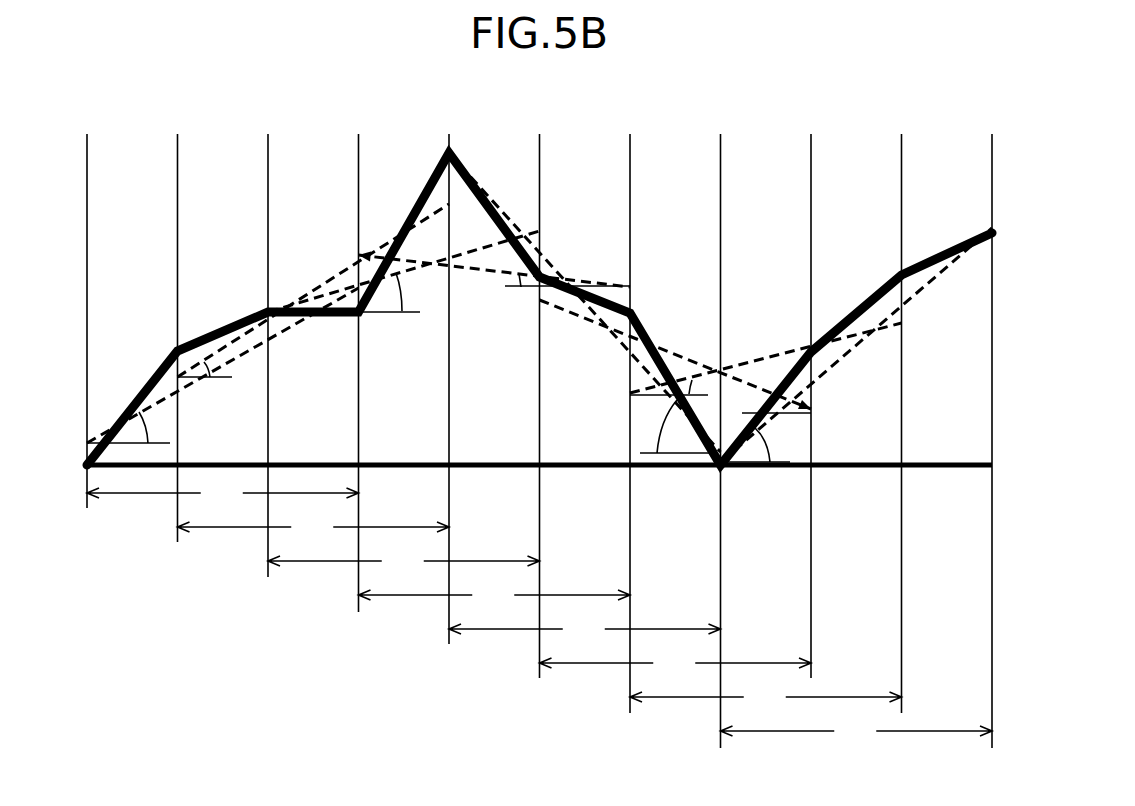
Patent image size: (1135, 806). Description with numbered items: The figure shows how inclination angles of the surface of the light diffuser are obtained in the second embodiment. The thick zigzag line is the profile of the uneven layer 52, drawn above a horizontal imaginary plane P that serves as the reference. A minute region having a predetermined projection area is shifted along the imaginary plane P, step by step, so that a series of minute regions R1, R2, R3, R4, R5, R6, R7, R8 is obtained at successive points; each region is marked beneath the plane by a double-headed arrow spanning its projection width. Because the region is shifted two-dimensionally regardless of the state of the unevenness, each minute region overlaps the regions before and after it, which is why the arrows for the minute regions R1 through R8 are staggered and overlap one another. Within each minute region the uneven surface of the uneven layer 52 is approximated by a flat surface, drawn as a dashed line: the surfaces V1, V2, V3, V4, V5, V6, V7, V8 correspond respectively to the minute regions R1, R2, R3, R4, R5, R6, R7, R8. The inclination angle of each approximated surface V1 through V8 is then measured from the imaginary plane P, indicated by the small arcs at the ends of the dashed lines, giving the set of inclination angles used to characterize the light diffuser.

The uneven layer 52 is at (410, 148).
The imaginary plane P is at (945, 468).
The surface of minute region V1 is at (277, 337).
The surface of minute region V2 is at (327, 283).
The surface of minute region V3 is at (480, 247).
The surface of minute region V4 is at (590, 281).
The surface of minute region V5 is at (619, 340).
The surface of minute region V6 is at (757, 387).
The surface of minute region V7 is at (730, 367).
The surface of minute region V8 is at (843, 355).
The minute region R1 is at (223, 496).
The minute region R2 is at (314, 530).
The minute region R3 is at (404, 564).
The minute region R4 is at (495, 598).
The minute region R5 is at (585, 632).
The minute region R6 is at (676, 666).
The minute region R7 is at (766, 700).
The minute region R8 is at (857, 734).